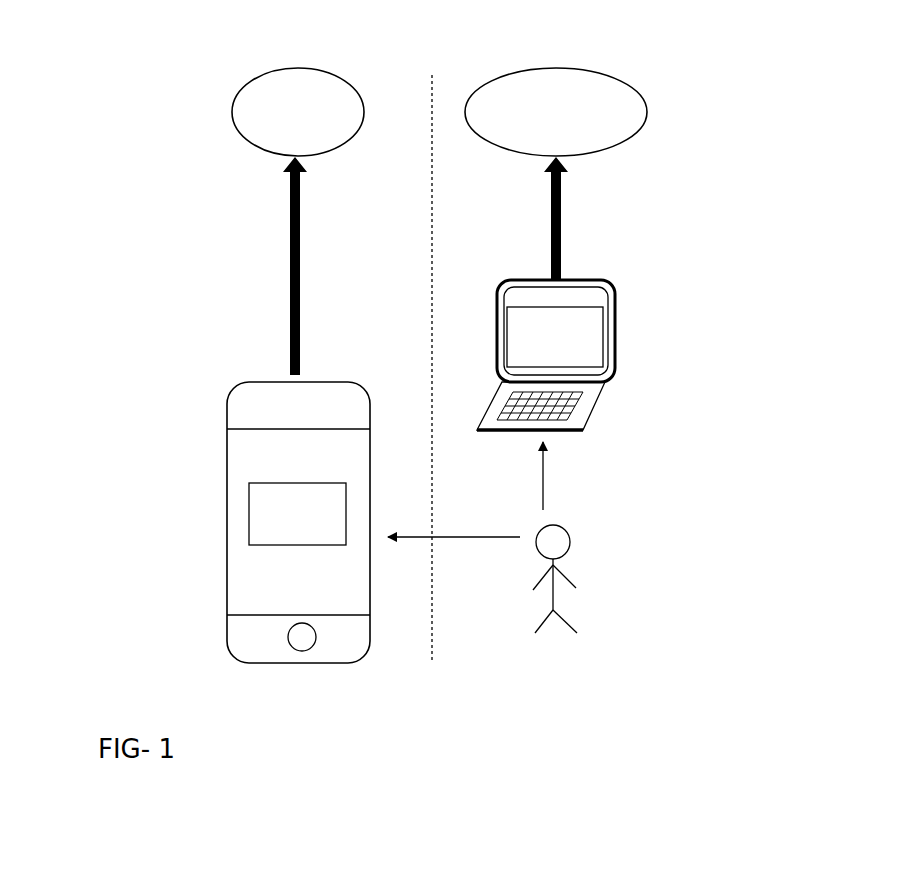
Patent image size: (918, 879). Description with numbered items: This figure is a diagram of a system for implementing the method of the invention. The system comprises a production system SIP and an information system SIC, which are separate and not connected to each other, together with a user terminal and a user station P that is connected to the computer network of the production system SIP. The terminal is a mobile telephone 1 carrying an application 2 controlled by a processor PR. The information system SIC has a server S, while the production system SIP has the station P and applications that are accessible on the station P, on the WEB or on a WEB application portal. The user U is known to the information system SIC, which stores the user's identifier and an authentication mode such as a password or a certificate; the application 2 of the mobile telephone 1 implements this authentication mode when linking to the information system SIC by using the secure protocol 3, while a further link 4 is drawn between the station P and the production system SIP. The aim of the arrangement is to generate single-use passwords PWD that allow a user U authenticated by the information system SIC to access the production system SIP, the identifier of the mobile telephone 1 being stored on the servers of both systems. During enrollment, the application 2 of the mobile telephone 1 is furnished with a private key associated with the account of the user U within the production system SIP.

The mobile telephone 1 is at (226, 540).
The application 2 is at (247, 503).
The secure protocol 3 is at (283, 248).
The transmission to production information system 4 is at (568, 214).
The information system SIC is at (262, 88).
The server S is at (352, 92).
The production system SIP is at (635, 72).
The single-use password PWD is at (585, 330).
The user station P is at (624, 345).
The processor PR is at (242, 465).
The user U is at (580, 553).